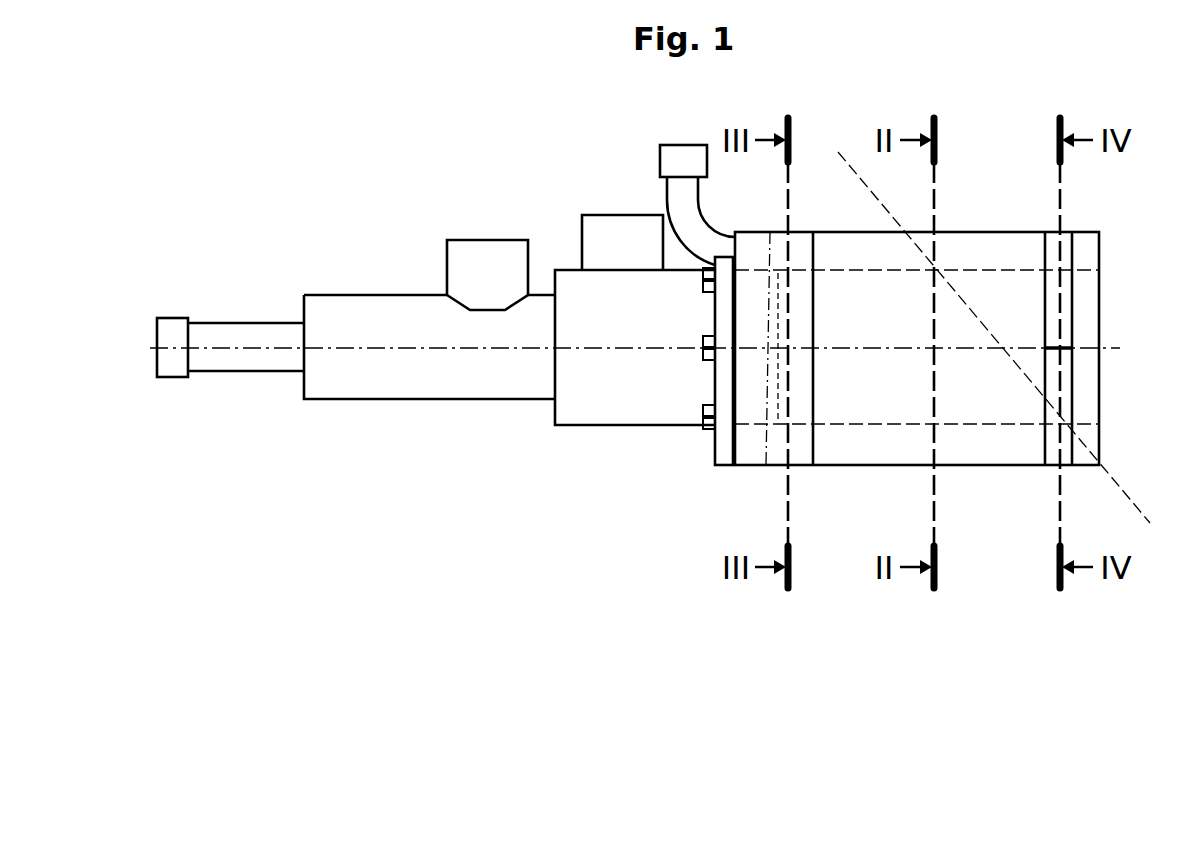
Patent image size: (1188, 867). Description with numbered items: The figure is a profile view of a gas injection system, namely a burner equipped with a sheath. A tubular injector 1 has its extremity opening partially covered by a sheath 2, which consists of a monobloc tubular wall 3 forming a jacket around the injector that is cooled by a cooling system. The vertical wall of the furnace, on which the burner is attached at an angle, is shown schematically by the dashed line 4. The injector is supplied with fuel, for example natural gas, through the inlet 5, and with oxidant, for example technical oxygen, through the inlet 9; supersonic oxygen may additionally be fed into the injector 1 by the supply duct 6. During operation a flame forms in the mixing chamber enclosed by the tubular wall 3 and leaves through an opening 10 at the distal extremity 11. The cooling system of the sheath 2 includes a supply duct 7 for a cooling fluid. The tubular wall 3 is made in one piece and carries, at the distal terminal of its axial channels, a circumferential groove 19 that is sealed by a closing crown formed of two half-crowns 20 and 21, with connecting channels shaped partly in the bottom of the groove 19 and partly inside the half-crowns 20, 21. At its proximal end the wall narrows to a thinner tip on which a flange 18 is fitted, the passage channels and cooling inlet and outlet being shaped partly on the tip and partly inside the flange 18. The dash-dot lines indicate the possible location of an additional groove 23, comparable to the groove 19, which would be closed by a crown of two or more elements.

The tubular injector 1 is at (588, 425).
The sheath 2 is at (851, 466).
The monobloc tubular wall 3 is at (968, 256).
The dashed line 4 is at (1137, 507).
The inlet 5 is at (455, 238).
The supply duct 6 is at (170, 317).
The supply duct 7 is at (660, 163).
The inlet 9 is at (580, 230).
The opening 10 is at (1100, 310).
The distal extremity 11 is at (1078, 231).
The flange 18 is at (776, 258).
The circumferential groove 19 is at (1068, 287).
The half-crown 20 is at (1065, 320).
The half-crown 21 is at (1060, 405).
The additional groove 23 is at (766, 465).